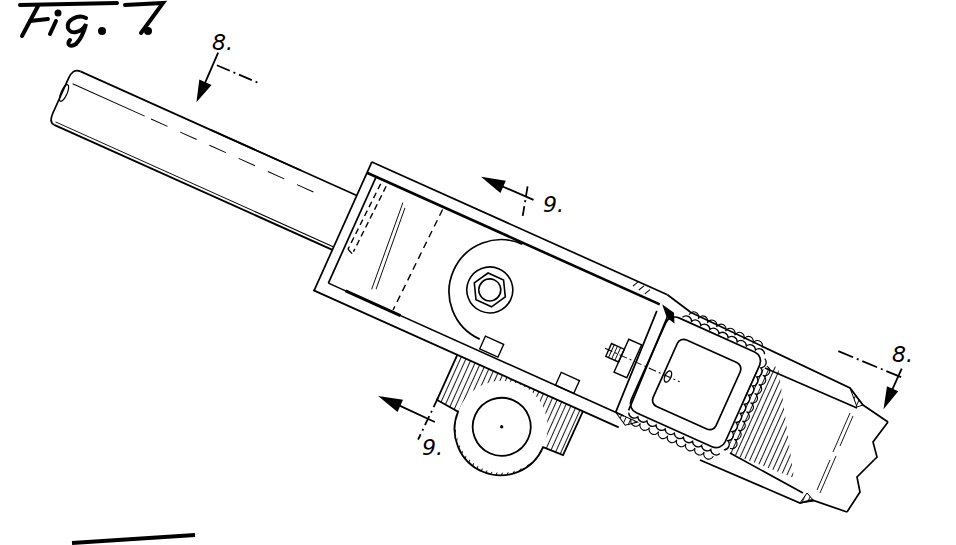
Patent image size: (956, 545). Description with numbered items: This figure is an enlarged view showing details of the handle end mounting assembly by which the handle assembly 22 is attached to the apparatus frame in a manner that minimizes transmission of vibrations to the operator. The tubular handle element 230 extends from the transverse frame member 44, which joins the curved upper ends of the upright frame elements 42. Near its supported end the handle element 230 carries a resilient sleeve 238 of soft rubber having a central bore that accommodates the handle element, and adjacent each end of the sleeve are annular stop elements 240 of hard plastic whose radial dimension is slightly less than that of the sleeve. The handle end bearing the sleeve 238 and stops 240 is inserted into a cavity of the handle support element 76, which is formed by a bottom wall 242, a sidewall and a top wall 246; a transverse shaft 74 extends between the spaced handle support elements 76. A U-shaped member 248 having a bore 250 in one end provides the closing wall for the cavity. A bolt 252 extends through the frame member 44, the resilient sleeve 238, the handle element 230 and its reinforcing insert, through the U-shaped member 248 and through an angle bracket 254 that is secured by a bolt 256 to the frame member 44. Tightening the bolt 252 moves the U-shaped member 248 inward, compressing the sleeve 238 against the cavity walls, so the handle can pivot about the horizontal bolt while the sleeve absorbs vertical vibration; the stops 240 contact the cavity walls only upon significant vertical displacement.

The handle assembly 22 is at (203, 190).
The tubular handle element 230 is at (247, 150).
The resilient sleeve 238 is at (450, 213).
The annular stop element 240 is at (400, 187).
The bore 250 is at (358, 192).
The bottom wall 242 is at (335, 297).
The U-shaped member 248 is at (413, 300).
The top wall 246 is at (580, 250).
The angle bracket 254 is at (608, 295).
The bolt 252 is at (493, 291).
The bolt 256 is at (616, 347).
The handle support element 76 is at (455, 367).
The transverse shaft 74 is at (490, 447).
The transverse frame member 44 is at (690, 433).
The upright frame element 42 is at (840, 500).